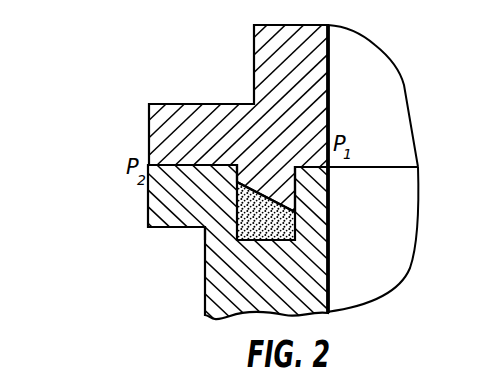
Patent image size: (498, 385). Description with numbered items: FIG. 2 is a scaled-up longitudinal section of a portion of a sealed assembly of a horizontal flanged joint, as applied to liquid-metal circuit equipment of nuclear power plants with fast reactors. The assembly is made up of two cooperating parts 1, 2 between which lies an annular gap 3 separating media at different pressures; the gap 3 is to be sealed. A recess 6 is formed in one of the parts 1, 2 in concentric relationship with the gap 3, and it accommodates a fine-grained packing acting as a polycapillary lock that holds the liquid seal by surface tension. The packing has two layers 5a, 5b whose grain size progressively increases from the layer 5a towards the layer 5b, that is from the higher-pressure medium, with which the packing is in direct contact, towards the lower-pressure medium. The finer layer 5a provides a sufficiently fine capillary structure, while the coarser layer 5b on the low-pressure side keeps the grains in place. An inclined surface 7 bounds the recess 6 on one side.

The cooperating part 1 is at (167, 188).
The cooperating part 2 is at (170, 133).
The annular gap 3 is at (365, 166).
The layer of the fine-grained packing 5a is at (253, 234).
The layer of the fine-grained packing 5b is at (207, 231).
The recess 6 is at (299, 237).
The inclined surface 7 is at (274, 197).